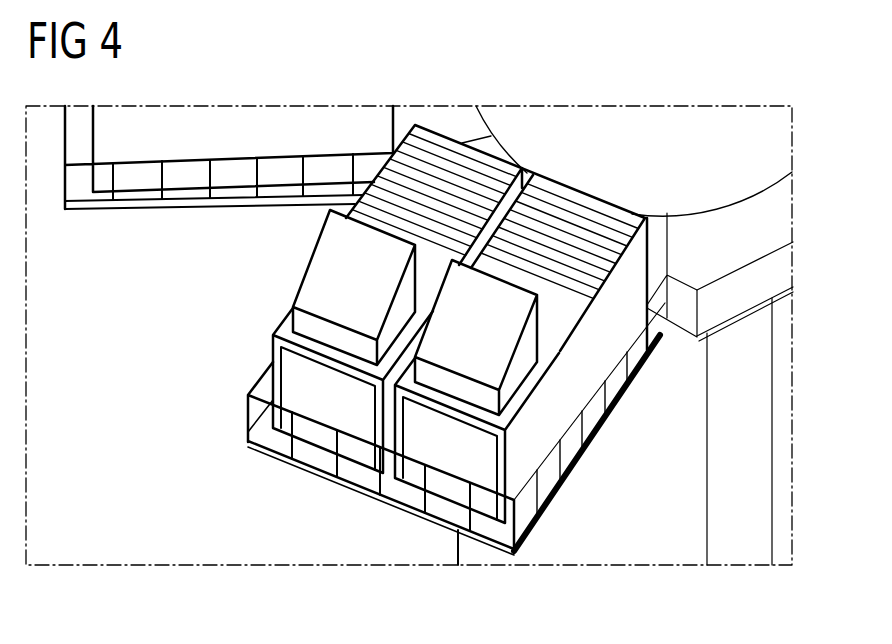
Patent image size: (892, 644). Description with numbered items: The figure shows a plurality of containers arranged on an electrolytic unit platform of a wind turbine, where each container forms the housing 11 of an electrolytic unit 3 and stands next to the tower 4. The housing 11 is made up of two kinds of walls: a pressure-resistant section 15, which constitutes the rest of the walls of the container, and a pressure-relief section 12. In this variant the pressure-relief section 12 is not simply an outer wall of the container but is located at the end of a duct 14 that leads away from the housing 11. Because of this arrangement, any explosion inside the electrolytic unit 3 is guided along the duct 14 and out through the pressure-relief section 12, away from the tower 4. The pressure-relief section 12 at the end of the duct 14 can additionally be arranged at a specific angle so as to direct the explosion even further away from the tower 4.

The electrolytic unit 3 is at (232, 309).
The housing 11 is at (455, 323).
The pressure-relief section 12 is at (325, 263).
The duct 14 is at (415, 285).
The pressure-resistant section 15 is at (455, 168).
The tower 4 is at (773, 143).